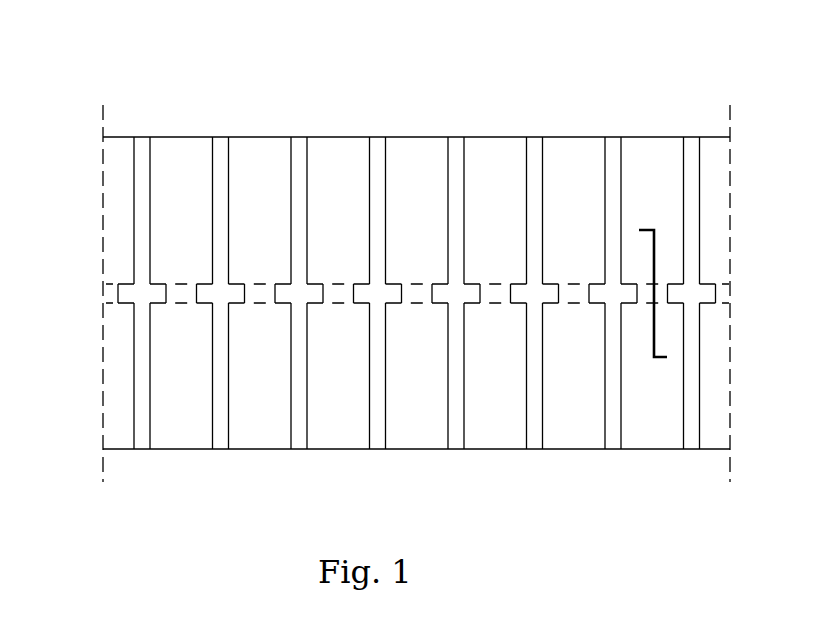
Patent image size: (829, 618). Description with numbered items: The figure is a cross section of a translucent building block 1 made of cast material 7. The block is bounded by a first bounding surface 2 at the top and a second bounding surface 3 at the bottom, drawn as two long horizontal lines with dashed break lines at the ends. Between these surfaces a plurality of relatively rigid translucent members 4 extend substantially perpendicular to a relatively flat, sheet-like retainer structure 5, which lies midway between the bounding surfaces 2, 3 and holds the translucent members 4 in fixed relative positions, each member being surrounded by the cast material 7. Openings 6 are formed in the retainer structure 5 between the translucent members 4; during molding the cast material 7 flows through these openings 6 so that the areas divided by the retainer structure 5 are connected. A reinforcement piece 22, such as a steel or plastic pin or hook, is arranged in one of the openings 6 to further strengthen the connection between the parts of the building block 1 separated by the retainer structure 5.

The translucent building block 1 is at (159, 498).
The first bounding surface 2 is at (643, 137).
The second bounding surface 3 is at (643, 450).
The translucent member 4 is at (377, 435).
The retainer structure 5 is at (236, 295).
The opening 6 is at (490, 297).
The cast material 7 is at (550, 433).
The reinforcement piece 22 is at (653, 359).